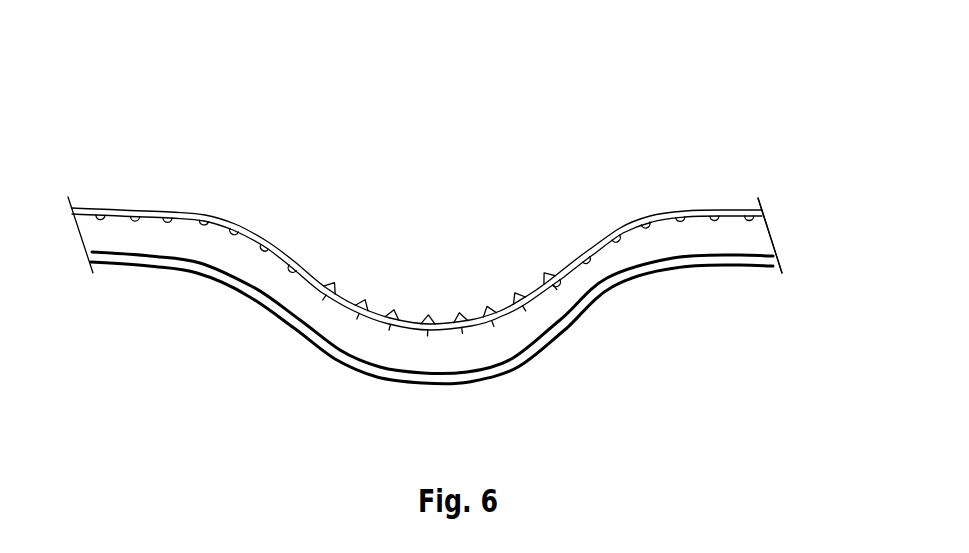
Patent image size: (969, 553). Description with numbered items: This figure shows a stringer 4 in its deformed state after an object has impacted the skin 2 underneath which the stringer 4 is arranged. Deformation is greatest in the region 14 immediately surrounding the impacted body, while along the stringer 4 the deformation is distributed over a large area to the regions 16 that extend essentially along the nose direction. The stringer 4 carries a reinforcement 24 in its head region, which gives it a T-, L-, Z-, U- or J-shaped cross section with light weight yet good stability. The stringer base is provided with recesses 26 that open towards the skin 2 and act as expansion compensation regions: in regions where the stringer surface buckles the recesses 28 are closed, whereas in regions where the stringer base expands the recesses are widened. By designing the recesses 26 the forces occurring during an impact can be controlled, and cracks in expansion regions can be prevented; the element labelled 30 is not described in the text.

The skin 2 is at (181, 209).
The stringer 4 is at (760, 238).
The region of greatest deformation 14 is at (405, 298).
The regions extending along the nose direction 16 is at (285, 236).
The reinforcement 24 is at (775, 258).
The recesses 26 is at (508, 315).
The closed recesses 28 is at (386, 325).
The bond 30 is at (208, 224).